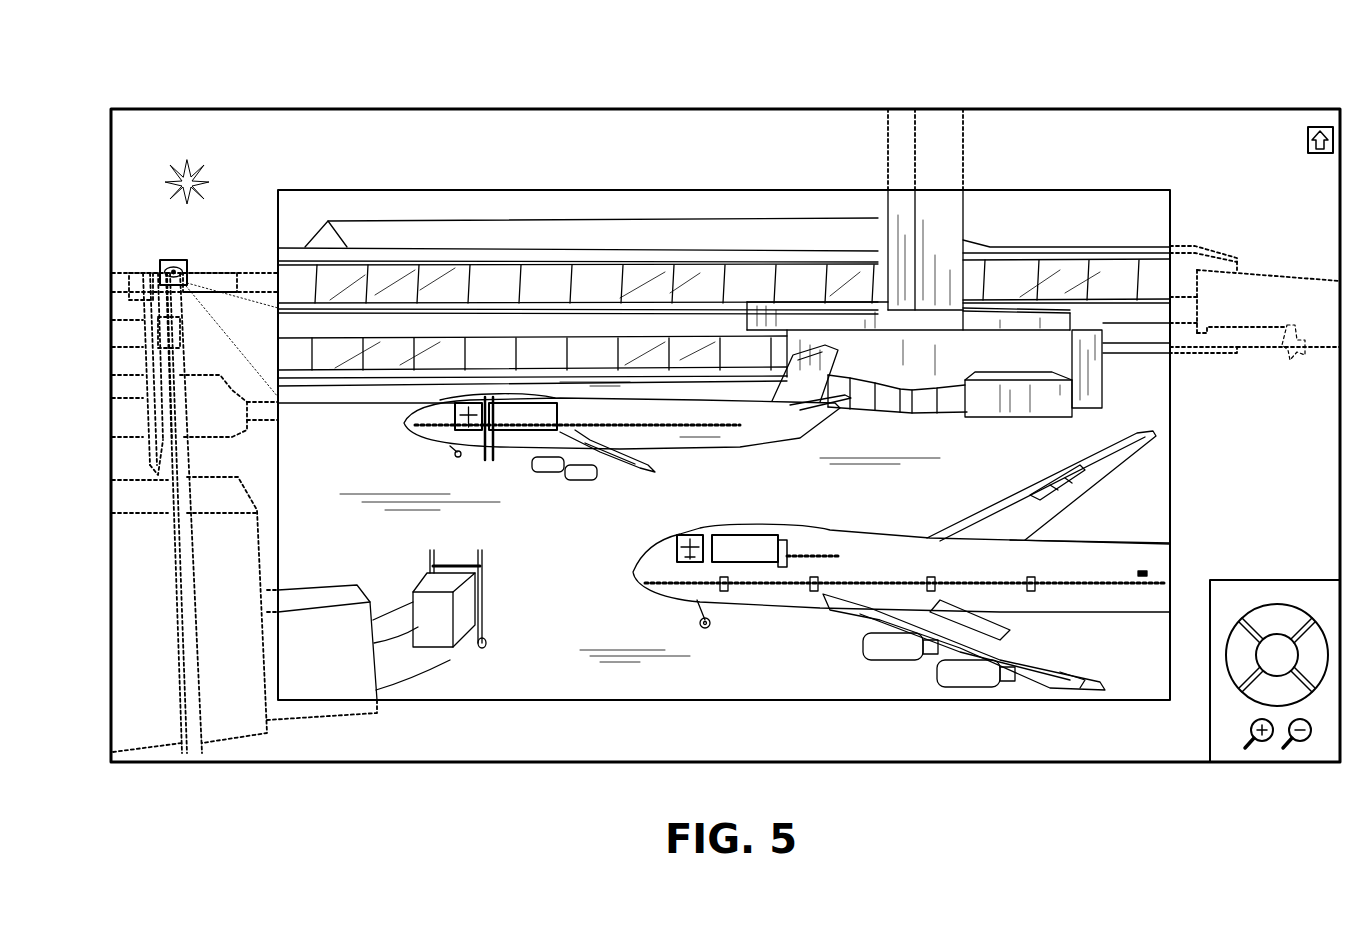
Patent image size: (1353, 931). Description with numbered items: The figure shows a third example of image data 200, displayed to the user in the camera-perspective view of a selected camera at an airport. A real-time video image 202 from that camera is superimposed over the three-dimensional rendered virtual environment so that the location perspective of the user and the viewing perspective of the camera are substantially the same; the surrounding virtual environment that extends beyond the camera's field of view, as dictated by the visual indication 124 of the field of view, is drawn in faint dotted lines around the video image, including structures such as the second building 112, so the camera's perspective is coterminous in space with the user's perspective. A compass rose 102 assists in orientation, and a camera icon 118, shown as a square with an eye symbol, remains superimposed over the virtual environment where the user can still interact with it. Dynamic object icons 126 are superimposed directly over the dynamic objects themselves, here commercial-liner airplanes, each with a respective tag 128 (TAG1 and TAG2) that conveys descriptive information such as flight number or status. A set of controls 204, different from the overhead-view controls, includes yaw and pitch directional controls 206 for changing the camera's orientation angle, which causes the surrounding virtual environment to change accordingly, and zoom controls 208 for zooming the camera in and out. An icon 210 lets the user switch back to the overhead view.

The image data 200 is at (226, 77).
The compass rose 102 is at (243, 172).
The second camera icon 118 is at (185, 262).
The visual indication 124 is at (233, 347).
The real-time video image 202 is at (1103, 190).
The second building 112 is at (1213, 252).
The icon 210 is at (1320, 155).
The dynamic object icons 126 is at (462, 432).
The tag 128 is at (518, 432).
The set of controls 204 is at (1253, 580).
The yaw and pitch directional controls 206 is at (1245, 604).
The zoom controls 208 is at (1233, 733).